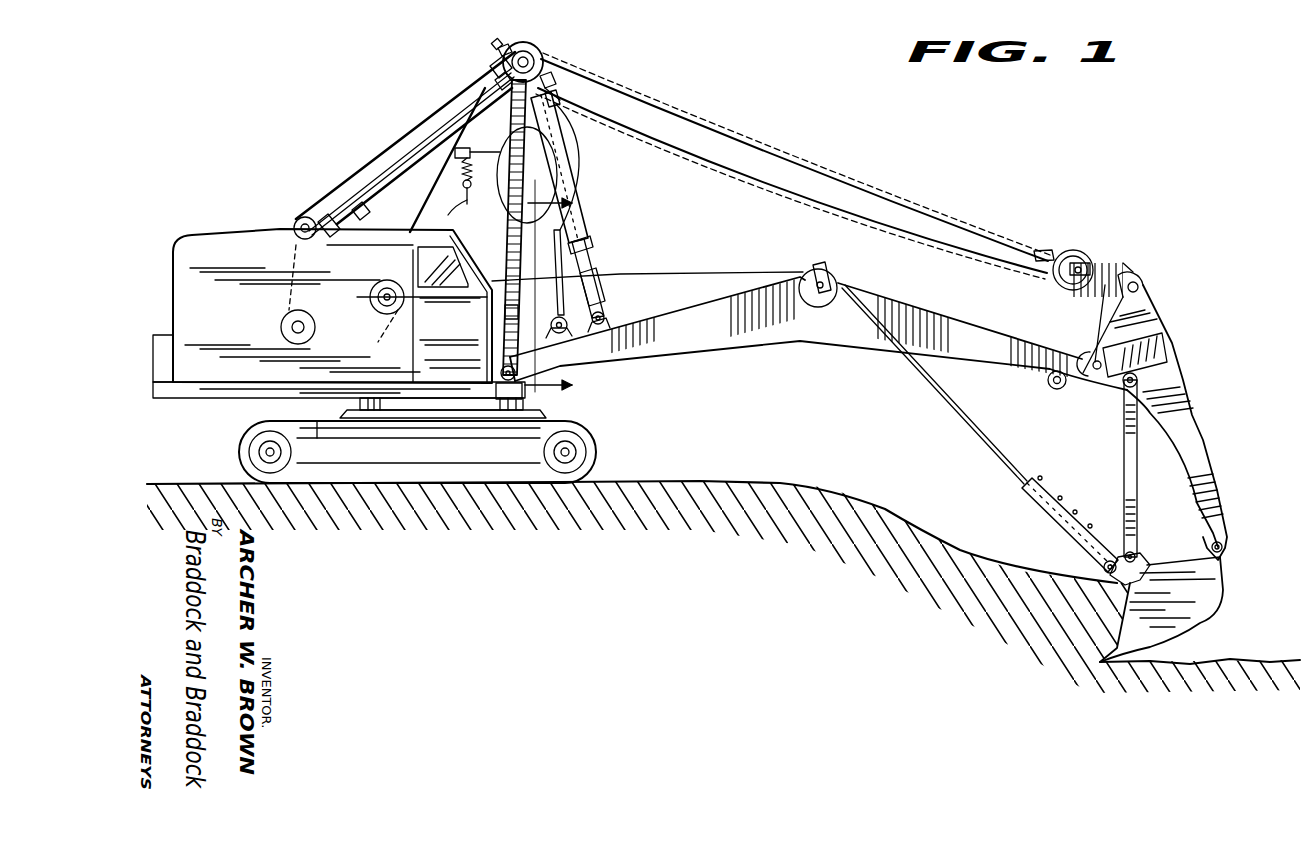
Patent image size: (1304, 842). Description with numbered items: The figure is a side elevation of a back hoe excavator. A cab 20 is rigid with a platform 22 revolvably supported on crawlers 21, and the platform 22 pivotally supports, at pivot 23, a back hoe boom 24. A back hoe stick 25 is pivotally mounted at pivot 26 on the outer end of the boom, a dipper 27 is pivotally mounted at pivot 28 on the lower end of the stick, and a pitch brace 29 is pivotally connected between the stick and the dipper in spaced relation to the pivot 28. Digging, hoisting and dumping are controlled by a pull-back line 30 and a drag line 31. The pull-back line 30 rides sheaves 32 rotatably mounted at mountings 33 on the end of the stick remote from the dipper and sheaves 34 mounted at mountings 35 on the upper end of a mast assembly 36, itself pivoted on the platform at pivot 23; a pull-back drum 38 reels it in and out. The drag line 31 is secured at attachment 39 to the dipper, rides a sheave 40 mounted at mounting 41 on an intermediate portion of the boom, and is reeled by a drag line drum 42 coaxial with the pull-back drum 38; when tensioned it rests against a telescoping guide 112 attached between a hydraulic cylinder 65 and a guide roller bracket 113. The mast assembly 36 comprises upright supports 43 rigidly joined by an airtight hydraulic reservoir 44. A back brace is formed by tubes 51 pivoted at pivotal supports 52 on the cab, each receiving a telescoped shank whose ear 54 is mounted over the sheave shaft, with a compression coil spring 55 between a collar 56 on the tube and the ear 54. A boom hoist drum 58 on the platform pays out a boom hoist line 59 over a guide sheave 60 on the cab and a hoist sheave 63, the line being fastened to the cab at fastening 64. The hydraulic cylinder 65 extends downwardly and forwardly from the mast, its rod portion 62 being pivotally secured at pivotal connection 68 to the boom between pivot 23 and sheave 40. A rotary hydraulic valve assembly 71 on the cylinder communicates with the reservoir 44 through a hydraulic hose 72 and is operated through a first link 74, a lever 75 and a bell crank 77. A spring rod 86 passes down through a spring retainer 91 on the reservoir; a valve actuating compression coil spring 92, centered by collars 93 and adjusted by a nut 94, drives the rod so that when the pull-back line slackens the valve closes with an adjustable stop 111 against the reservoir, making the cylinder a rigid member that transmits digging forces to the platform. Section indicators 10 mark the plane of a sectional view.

The section line 10- 10 is at (574, 289).
The cab 20 is at (220, 242).
The crawlers 21 is at (596, 432).
The platform 22 is at (535, 403).
The pivot 23 is at (528, 366).
The back hoe boom 24 is at (722, 360).
The back hoe stick 25 is at (1180, 388).
The pivot 26 is at (1095, 360).
The dipper 27 is at (1190, 630).
The pivot 28 is at (1224, 540).
The pitch brace 29 is at (1122, 460).
The pull-back line 30 is at (903, 196).
The drag line 31 is at (975, 428).
The sheaves 32 is at (1082, 255).
The rotatable mounting 33 is at (1095, 270).
The sheaves 34 is at (537, 55).
The rotatable mounting 35 is at (527, 55).
The mast assembly 36 is at (565, 128).
The pull-back drum 38 is at (368, 310).
The drag line attachment 39 is at (1065, 520).
The sheave 40 is at (826, 308).
The rotatable mounting 41 is at (838, 282).
The drag line drum 42 is at (376, 334).
The upright supports 43 is at (507, 262).
The hydraulic reservoir 44 is at (508, 215).
The tubes 51 is at (352, 218).
The pivotal support 52 is at (300, 220).
The ear 54 is at (503, 52).
The compression coil spring 55 is at (490, 70).
The collar 56 is at (494, 82).
The boom hoist drum 58 is at (280, 329).
The boom hoist line 59 is at (378, 150).
The guide sheave 60 is at (294, 224).
The rod portion 62 is at (592, 275).
The hoist sheave 63 is at (512, 45).
The fastening 64 is at (337, 247).
The hydraulic cylinder 65 is at (570, 210).
The pivotal connection 68 is at (604, 312).
The rotary hydraulic valve assembly 71 is at (556, 104).
The hydraulic hose 72 is at (585, 172).
The first link 74 is at (556, 82).
The lever 75 is at (580, 66).
The bell crank 77 is at (485, 143).
The spring rod 86 is at (458, 185).
The spring retainer 91 is at (463, 164).
The valve actuating compression coil spring 92 is at (458, 195).
The collars 93 is at (485, 173).
The nut 94 is at (476, 203).
The adjustable stop 111 is at (440, 110).
The telescoping guide 112 is at (583, 245).
The guide roller bracket 113 is at (505, 312).